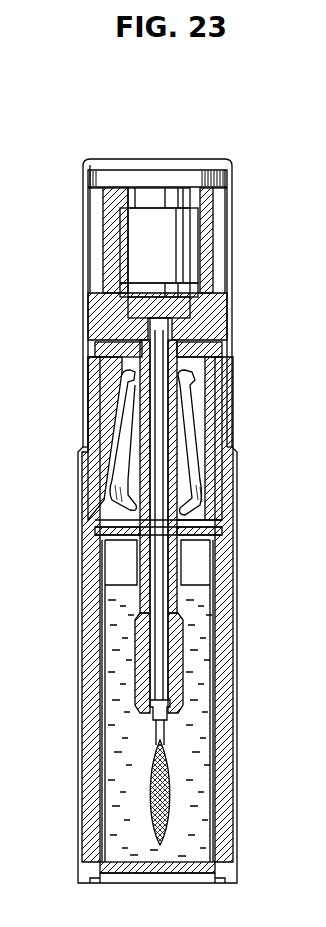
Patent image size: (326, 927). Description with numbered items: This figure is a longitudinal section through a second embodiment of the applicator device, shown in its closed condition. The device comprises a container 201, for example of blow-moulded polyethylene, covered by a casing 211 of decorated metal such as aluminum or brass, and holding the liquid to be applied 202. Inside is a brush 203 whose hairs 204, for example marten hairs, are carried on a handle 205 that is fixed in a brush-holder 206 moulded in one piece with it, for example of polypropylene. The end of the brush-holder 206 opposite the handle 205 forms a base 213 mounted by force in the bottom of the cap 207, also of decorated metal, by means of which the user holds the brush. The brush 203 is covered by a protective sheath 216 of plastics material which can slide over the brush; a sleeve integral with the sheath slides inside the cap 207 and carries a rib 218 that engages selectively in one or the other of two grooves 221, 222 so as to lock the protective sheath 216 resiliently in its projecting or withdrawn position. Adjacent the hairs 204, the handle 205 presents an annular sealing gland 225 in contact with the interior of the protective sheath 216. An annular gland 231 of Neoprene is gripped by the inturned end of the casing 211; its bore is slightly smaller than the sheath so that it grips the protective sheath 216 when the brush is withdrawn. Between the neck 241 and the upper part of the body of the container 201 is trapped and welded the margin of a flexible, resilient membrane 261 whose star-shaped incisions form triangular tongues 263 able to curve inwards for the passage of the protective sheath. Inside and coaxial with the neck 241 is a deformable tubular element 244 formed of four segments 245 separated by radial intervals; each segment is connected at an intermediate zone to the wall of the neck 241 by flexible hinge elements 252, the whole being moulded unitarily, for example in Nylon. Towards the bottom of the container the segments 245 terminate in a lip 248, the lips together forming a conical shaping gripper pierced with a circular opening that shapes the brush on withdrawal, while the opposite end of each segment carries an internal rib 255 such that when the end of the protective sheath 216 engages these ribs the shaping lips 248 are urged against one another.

The container 201 is at (88, 757).
The liquid to be applied 202 is at (108, 822).
The brush 203 is at (150, 674).
The hairs 204 is at (157, 830).
The handle 205 is at (160, 452).
The brush-holder 206 is at (185, 250).
The cap 207 is at (84, 245).
The casing 211 is at (82, 600).
The base 213 is at (226, 178).
The protective sheath 216 is at (147, 571).
The rib 218 is at (181, 188).
The groove 221 is at (195, 292).
The groove 222 is at (90, 198).
The annular sealing gland 225 is at (165, 706).
The annular gland 231 is at (215, 355).
The neck 241 is at (88, 370).
The deformable tubular element 244 is at (205, 487).
The segments 245 is at (197, 455).
The lip 248 is at (135, 523).
The flexible hinge elements 252 is at (198, 399).
The internal rib 255 is at (122, 380).
The membrane 261 is at (213, 526).
The triangular tongues 263 is at (194, 562).